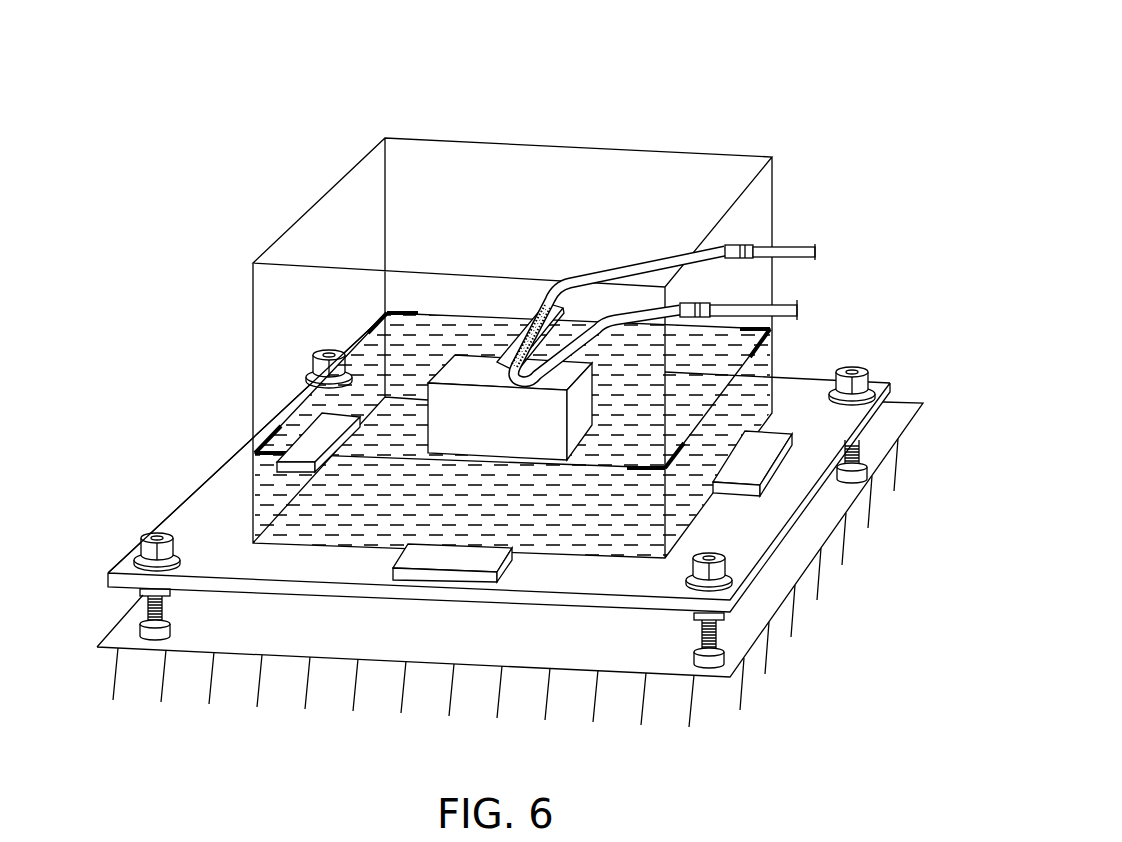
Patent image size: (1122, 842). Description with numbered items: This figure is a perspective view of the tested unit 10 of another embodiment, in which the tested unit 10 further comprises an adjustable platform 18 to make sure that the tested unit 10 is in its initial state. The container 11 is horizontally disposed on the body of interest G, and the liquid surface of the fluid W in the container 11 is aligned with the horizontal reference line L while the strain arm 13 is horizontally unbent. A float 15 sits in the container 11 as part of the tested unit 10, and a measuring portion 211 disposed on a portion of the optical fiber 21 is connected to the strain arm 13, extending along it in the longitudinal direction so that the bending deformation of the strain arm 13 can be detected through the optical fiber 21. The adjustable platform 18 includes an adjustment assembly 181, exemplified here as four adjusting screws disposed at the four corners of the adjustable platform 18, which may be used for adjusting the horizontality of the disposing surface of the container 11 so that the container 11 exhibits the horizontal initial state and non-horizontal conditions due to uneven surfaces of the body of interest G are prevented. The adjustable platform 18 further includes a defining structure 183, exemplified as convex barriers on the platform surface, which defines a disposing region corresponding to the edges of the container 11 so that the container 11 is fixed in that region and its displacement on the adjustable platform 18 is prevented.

The tested unit 10 is at (512, 62).
The container 11 is at (346, 175).
The strain arm 13 is at (517, 332).
The float 15 is at (459, 356).
The adjustable platform 18 is at (193, 504).
The adjustment assembly 181 is at (329, 350).
The defining structure 183 is at (318, 427).
The optical fiber 21 is at (805, 248).
The measuring portion 211 is at (542, 318).
The horizontal reference line L is at (262, 457).
The fluid W is at (266, 507).
The body of interest G is at (372, 716).